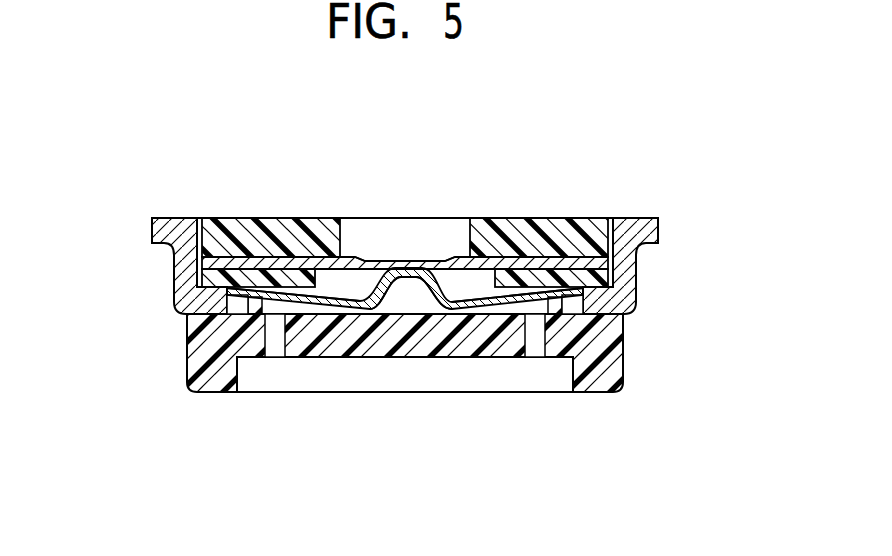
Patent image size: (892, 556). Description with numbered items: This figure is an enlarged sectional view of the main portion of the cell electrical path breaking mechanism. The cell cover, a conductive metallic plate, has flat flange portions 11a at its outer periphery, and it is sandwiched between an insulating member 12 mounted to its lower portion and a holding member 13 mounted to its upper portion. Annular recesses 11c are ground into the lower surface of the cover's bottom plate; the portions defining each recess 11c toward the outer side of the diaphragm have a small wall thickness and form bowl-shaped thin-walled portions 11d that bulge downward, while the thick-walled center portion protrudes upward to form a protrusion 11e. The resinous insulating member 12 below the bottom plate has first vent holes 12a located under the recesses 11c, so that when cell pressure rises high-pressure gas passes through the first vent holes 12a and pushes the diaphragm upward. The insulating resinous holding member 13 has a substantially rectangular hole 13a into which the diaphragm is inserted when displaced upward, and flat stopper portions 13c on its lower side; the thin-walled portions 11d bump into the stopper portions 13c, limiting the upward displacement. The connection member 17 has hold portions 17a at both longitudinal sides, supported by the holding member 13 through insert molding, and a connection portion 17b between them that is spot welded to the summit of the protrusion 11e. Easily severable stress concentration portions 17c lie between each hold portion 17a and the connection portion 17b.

The flange portion 11a is at (160, 218).
The recess 11c is at (245, 315).
The thin-walled portion 11d is at (280, 314).
The protrusion 11e is at (406, 278).
The insulating member 12 is at (634, 352).
The first vent hole 12a is at (259, 309).
The holding member 13 is at (594, 210).
The hole 13a is at (440, 250).
The stopper portion 13c is at (262, 235).
The connection member 17 is at (424, 246).
The hold portion 17a is at (333, 302).
The connection portion 17b is at (393, 257).
The stress concentration portion 17c is at (359, 258).